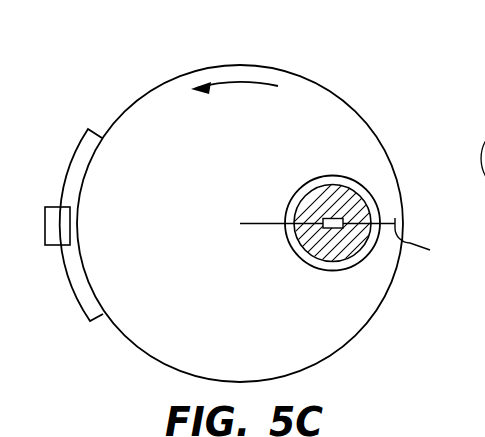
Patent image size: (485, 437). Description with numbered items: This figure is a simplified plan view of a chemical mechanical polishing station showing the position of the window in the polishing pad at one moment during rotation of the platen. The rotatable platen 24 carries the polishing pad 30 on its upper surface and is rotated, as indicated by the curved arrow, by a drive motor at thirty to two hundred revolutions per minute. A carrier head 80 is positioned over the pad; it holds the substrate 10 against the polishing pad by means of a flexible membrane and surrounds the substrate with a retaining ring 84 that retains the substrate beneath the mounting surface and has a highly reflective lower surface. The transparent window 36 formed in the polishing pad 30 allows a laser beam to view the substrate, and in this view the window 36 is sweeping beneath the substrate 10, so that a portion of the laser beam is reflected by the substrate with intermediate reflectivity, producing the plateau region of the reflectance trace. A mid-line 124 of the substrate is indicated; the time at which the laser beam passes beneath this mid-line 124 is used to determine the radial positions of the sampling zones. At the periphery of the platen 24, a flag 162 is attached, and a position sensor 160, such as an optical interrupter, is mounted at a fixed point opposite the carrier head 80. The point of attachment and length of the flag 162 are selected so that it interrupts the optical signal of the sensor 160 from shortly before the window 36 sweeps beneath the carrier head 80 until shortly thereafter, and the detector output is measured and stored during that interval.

The polishing pad 30 is at (342, 113).
The carrier head 80 is at (352, 178).
The retaining ring 84 is at (368, 197).
The mid-line 124 is at (431, 240).
The substrate 10 is at (360, 252).
The window 36 is at (342, 266).
The platen 24 is at (327, 362).
The position sensor 160 is at (50, 245).
The flag 162 is at (99, 131).